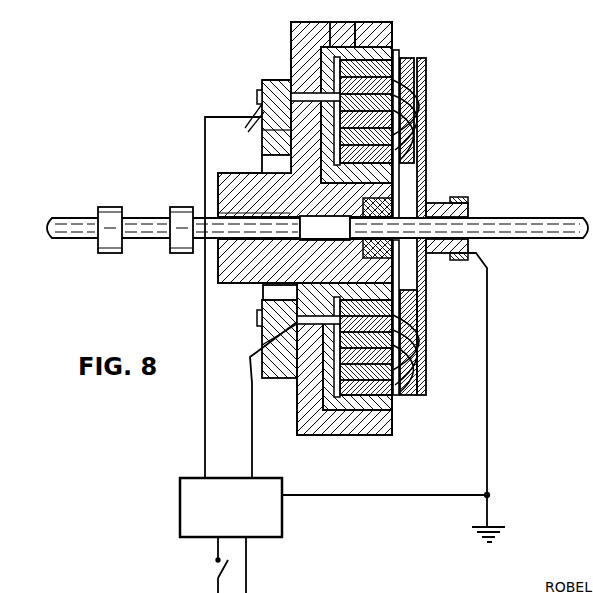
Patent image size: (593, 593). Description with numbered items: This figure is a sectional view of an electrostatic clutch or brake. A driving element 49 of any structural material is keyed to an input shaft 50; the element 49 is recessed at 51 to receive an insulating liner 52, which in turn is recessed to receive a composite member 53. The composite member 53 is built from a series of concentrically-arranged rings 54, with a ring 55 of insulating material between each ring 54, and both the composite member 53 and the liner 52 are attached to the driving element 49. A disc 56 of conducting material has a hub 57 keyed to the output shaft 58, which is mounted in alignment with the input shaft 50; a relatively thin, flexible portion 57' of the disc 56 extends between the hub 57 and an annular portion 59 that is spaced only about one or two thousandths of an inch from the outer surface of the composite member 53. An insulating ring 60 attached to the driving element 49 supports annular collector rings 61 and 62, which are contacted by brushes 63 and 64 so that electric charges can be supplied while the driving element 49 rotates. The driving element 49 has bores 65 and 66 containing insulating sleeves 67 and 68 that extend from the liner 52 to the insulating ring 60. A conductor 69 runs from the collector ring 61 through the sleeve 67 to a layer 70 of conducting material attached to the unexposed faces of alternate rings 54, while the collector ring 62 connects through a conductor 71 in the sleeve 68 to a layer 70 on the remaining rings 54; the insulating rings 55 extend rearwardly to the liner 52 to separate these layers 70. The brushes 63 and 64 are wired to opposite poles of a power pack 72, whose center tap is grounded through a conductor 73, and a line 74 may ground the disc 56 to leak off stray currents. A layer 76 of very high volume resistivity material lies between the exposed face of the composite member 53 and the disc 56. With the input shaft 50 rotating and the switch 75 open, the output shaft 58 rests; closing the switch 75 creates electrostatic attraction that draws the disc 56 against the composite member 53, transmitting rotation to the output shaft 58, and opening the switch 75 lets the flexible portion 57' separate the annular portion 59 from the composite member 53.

The driving element 49 is at (317, 29).
The input shaft 50 is at (74, 218).
The recess 51 is at (354, 28).
The insulating liner 52 is at (360, 33).
The composite member 53 is at (398, 53).
The concentrically-arranged rings 54 is at (426, 108).
The insulating ring 55 is at (420, 352).
The disc 56 is at (433, 262).
The hub 57 is at (439, 226).
The flexible portion 57' is at (429, 137).
The output shaft 58 is at (527, 218).
The annular portion 59 is at (415, 60).
The insulating ring 60 is at (277, 80).
The collector ring 61 is at (260, 81).
The collector ring 62 is at (262, 303).
The brush 63 is at (257, 97).
The brush 64 is at (257, 318).
The bore 65 is at (300, 93).
The bore 66 is at (305, 306).
The insulating sleeve 67 is at (273, 131).
The insulating sleeve 68 is at (262, 346).
The conductor 69 is at (234, 291).
The layer of conducting material 70 is at (297, 394).
The conductor 71 is at (262, 337).
The power pack 72 is at (250, 518).
The conductor 73 is at (381, 495).
The line 74 is at (488, 410).
The switch 75 is at (214, 568).
The layer 76 is at (399, 396).